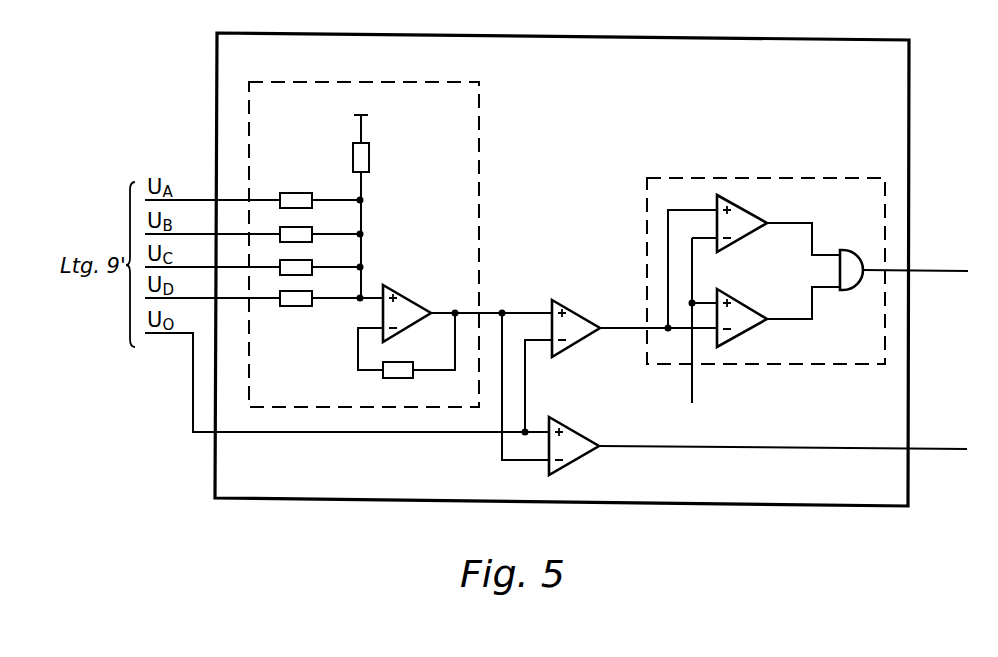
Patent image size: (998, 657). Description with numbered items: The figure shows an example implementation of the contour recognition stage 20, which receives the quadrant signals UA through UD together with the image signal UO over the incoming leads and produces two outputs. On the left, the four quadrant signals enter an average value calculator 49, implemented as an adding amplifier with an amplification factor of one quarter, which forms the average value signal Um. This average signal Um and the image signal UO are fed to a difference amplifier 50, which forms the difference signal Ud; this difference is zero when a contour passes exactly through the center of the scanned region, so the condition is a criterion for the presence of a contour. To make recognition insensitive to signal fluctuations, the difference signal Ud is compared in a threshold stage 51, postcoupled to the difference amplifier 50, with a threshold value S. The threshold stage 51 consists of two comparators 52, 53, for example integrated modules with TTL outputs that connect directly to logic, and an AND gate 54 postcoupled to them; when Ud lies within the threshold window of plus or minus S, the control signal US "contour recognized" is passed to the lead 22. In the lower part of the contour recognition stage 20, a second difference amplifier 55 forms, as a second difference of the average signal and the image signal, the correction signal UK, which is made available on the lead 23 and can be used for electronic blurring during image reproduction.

The contour recognition stage 20 is at (896, 112).
The lead 22 is at (926, 275).
The lead 23 is at (933, 452).
The average value calculator 49 is at (461, 126).
The difference amplifier 50 is at (577, 333).
The threshold stage 51 is at (748, 187).
The comparator 52 is at (741, 223).
The comparator 53 is at (742, 316).
The AND gate 54 is at (849, 289).
The comparator 55 is at (580, 455).